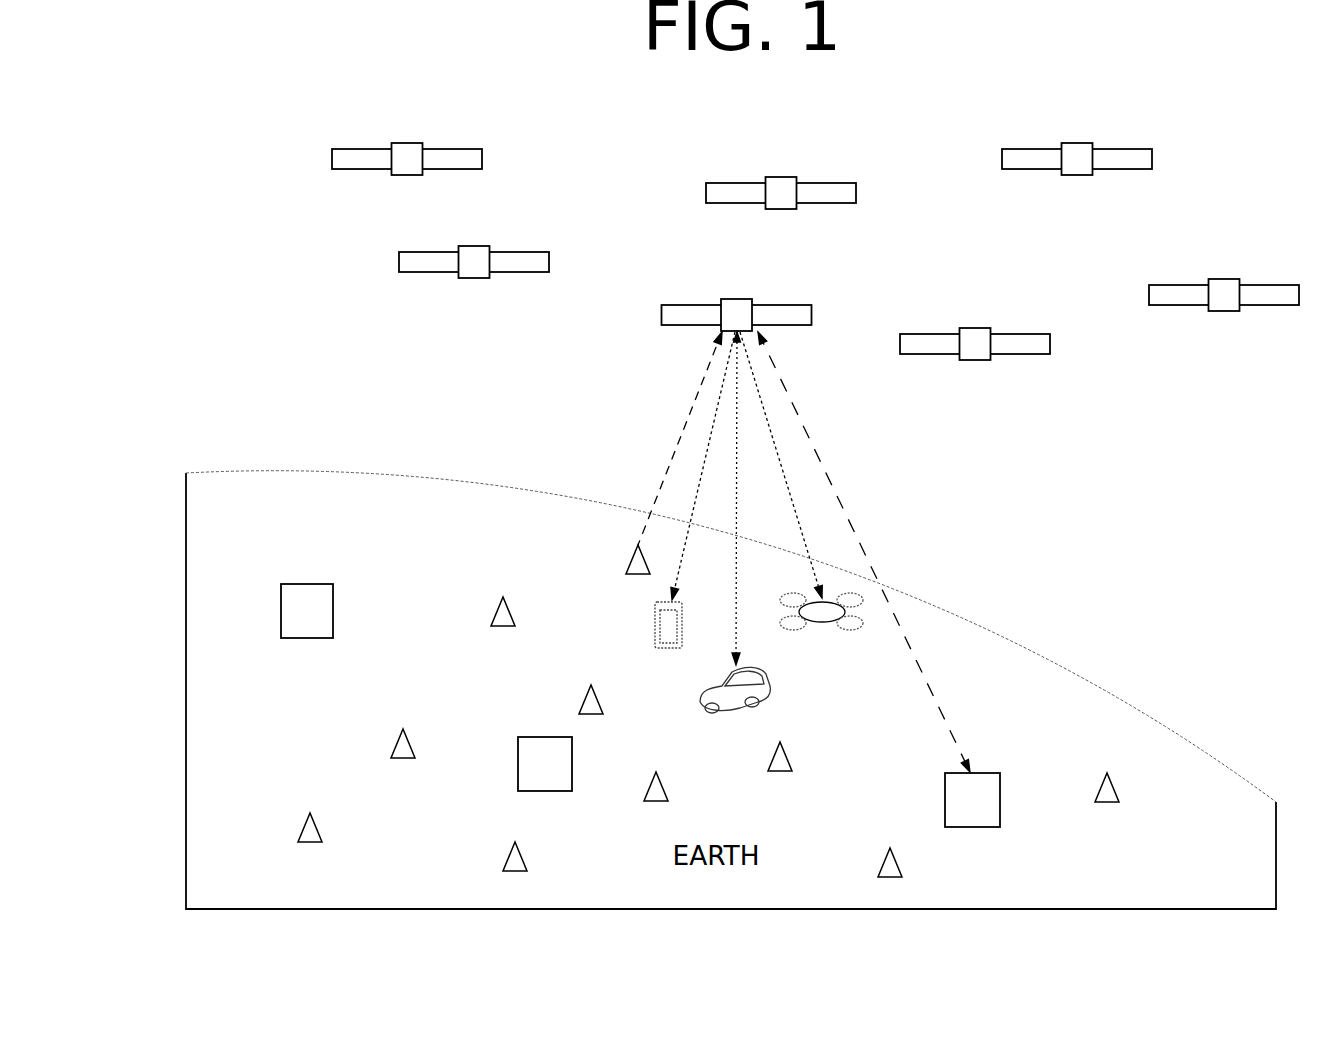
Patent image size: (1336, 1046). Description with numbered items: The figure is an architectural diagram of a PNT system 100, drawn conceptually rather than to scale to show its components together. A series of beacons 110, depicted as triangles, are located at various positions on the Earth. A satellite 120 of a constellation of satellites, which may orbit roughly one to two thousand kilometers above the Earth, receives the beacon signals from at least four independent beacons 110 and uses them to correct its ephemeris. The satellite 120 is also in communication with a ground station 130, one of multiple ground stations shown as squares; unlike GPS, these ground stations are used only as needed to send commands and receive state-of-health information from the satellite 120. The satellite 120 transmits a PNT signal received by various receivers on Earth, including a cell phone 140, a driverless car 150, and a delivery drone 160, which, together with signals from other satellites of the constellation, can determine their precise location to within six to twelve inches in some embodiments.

The PNT system 100 is at (254, 132).
The beacons 110 is at (630, 563).
The satellite 120 is at (722, 300).
The ground station 130 is at (947, 802).
The cell phone 140 is at (657, 618).
The driverless car 150 is at (703, 693).
The delivery drone 160 is at (820, 625).